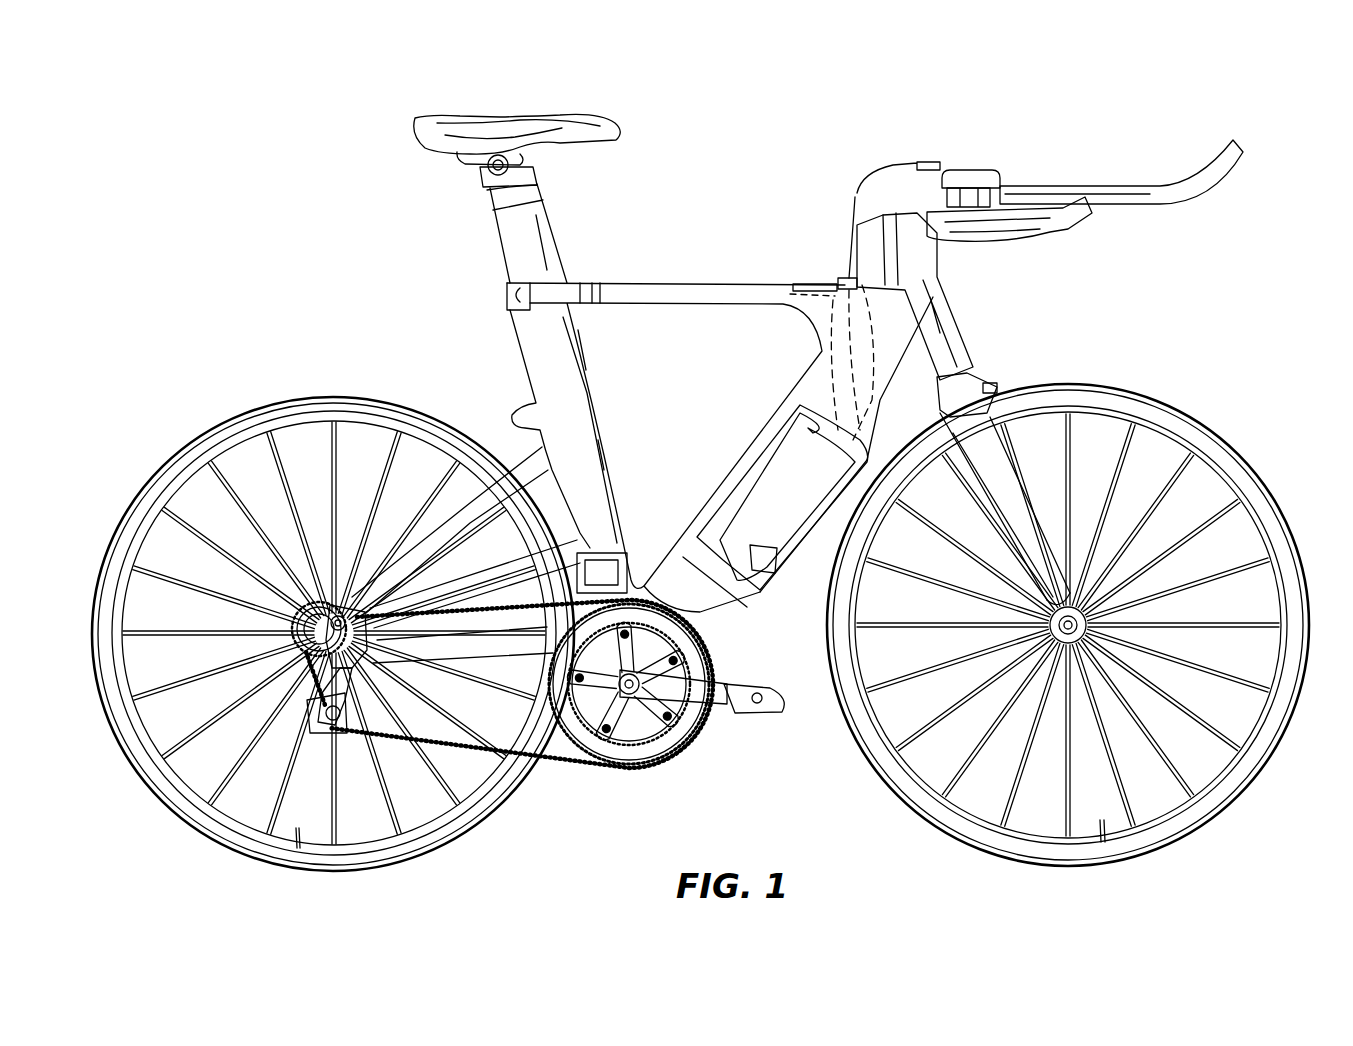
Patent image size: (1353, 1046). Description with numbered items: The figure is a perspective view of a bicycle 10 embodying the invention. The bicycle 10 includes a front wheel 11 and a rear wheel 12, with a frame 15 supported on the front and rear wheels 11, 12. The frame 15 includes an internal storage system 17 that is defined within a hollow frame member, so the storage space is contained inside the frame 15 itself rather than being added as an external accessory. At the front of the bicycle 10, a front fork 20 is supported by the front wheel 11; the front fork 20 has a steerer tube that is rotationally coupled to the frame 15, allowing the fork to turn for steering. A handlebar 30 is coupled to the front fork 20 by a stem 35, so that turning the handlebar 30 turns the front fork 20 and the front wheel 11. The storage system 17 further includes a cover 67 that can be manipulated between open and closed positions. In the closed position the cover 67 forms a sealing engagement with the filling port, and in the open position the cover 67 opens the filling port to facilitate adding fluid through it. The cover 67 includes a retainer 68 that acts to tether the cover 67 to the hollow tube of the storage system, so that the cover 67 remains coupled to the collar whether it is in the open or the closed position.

The bicycle 10 is at (1040, 114).
The front wheel 11 is at (1152, 415).
The rear wheel 12 is at (212, 432).
The frame 15 is at (705, 275).
The internal storage system 17 is at (738, 494).
The front fork 20 is at (988, 448).
The handlebar 30 is at (1063, 222).
The stem 35 is at (960, 236).
The cover 67 is at (813, 283).
The retainer 68 is at (847, 279).